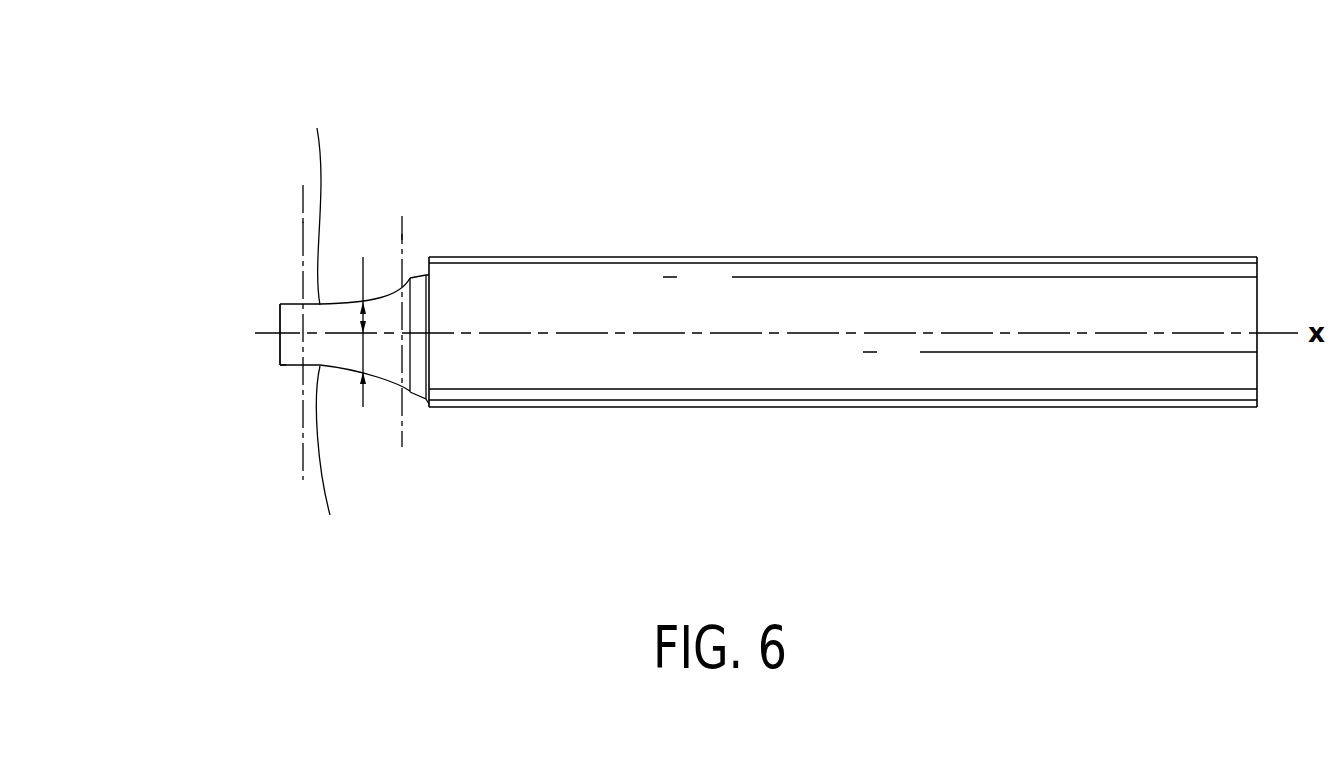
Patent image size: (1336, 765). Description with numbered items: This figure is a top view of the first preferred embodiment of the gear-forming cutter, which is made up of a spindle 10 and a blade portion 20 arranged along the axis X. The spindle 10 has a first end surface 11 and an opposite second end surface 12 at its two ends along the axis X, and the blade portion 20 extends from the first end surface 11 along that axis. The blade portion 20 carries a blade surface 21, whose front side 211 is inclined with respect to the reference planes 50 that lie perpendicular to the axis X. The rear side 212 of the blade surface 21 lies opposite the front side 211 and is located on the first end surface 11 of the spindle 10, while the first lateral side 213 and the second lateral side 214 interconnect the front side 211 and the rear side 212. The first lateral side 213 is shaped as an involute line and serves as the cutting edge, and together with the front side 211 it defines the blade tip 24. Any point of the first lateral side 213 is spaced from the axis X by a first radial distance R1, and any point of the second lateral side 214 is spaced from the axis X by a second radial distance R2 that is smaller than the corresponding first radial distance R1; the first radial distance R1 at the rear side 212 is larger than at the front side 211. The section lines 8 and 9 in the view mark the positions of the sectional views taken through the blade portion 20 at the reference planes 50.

The spindle 10 is at (915, 252).
The first end surface 11 is at (429, 316).
The second end surface 12 is at (1260, 283).
The blade portion 20 is at (236, 328).
The blade surface 21 is at (288, 349).
The front side 211 is at (278, 326).
The blade tip 24 is at (278, 366).
The rear side 212 is at (412, 304).
The first lateral side 213 is at (358, 461).
The second lateral side 214 is at (351, 201).
The reference planes 50 is at (303, 225).
The section line 8- 8 is at (300, 473).
The section line 9- 9 is at (399, 441).
The first radial distance R1 is at (346, 374).
The second radial distance R2 is at (346, 295).